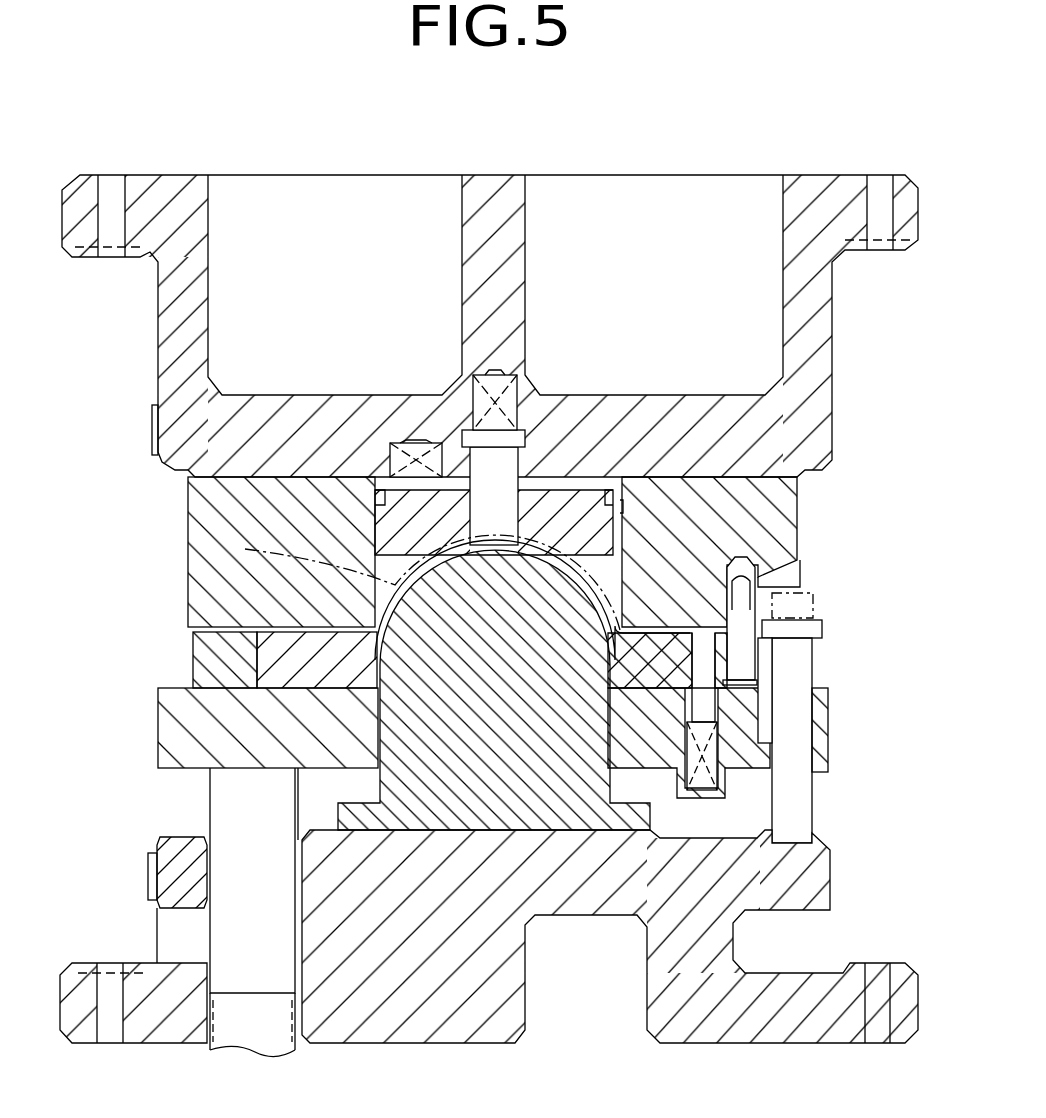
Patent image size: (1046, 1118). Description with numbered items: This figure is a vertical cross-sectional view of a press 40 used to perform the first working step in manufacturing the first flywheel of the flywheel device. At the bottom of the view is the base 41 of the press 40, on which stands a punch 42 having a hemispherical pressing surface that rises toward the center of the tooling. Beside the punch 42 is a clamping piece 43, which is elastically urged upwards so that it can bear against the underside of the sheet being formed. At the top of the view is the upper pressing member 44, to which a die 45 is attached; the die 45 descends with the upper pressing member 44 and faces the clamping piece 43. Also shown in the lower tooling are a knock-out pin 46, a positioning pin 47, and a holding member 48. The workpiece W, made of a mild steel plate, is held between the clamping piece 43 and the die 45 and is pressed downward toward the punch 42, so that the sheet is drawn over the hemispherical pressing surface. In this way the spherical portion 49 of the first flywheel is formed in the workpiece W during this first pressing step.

The press 40 is at (862, 448).
The base 41 is at (392, 1018).
The punch 42 is at (508, 725).
The clamping piece 43 is at (268, 657).
The upper pressing member 44 is at (790, 177).
The die 45 is at (780, 521).
The knock-out pin 46 is at (705, 673).
The positioning pin 47 is at (740, 608).
The holding member 48 is at (530, 436).
The spherical portion 49 is at (245, 549).
The workpiece W is at (622, 617).